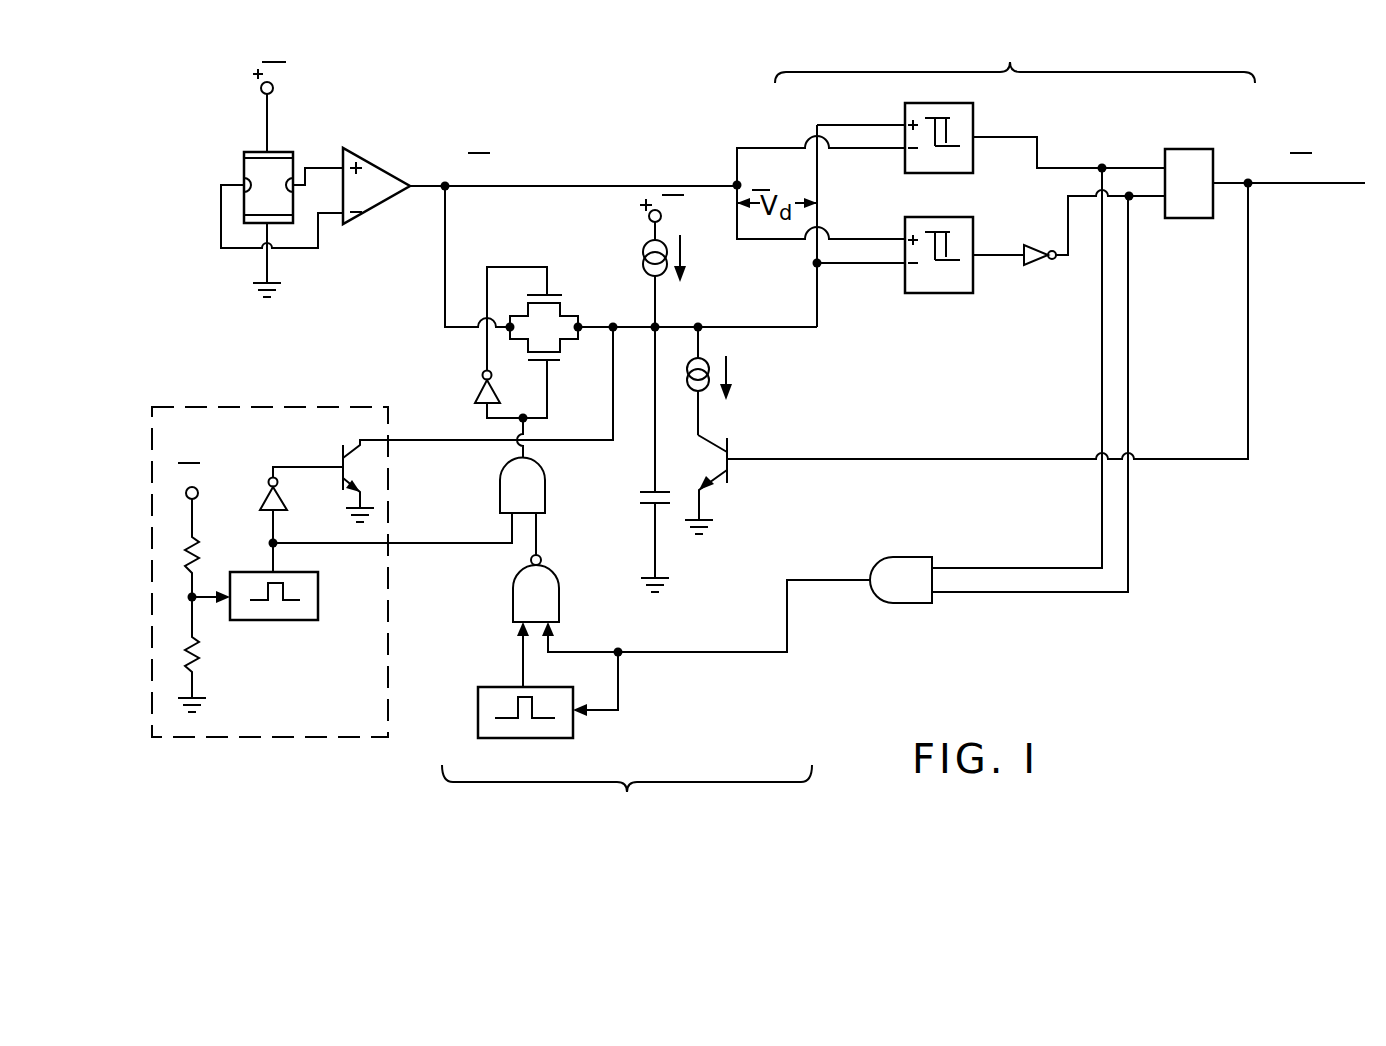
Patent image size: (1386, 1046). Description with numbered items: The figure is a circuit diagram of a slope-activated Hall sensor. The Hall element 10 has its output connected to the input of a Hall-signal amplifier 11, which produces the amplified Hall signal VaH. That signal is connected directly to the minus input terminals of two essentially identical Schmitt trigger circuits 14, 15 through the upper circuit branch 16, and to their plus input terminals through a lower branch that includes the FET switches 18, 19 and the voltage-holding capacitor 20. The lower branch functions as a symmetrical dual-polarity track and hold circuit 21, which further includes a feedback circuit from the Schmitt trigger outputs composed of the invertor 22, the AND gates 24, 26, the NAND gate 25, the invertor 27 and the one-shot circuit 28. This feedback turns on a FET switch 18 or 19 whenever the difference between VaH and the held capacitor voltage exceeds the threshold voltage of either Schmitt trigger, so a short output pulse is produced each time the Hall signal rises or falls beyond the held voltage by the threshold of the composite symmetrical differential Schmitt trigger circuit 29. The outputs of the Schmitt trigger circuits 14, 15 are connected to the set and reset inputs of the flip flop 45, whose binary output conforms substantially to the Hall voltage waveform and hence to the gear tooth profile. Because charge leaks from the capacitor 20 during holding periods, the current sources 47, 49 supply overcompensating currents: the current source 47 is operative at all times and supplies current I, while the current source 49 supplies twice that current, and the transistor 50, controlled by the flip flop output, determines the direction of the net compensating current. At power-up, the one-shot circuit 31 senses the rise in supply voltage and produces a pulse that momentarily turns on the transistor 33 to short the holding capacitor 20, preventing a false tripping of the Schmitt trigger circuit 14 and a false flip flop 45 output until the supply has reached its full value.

The Hall element 10 is at (252, 170).
The Hall-signal amplifier 11 is at (372, 182).
The Schmitt trigger circuit 14 is at (962, 120).
The Schmitt trigger circuit 15 is at (962, 234).
The upper circuit branch 16 is at (585, 186).
The FET switch 18 is at (560, 302).
The FET switch 19 is at (562, 362).
The voltage-holding capacitor 20 is at (640, 497).
The track and hold circuit 21 is at (627, 796).
The invertor 22 is at (1036, 262).
The AND gate 24 is at (908, 592).
The NAND gate 25 is at (550, 598).
The AND gate 26 is at (543, 488).
The invertor 27 is at (480, 385).
The one-shot circuit 28 is at (535, 728).
The composite symmetrical differential Schmitt trigger circuit 29 is at (1015, 59).
The one-shot circuit 31 is at (280, 612).
The transistor 33 is at (340, 450).
The flip flop 45 is at (1197, 162).
The current source 47 is at (643, 252).
The current source 49 is at (688, 373).
The transistor 50 is at (730, 450).